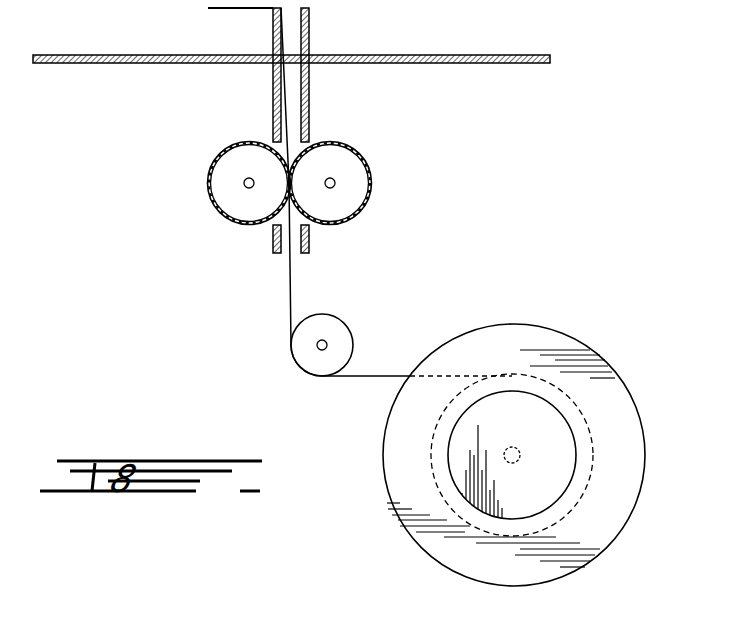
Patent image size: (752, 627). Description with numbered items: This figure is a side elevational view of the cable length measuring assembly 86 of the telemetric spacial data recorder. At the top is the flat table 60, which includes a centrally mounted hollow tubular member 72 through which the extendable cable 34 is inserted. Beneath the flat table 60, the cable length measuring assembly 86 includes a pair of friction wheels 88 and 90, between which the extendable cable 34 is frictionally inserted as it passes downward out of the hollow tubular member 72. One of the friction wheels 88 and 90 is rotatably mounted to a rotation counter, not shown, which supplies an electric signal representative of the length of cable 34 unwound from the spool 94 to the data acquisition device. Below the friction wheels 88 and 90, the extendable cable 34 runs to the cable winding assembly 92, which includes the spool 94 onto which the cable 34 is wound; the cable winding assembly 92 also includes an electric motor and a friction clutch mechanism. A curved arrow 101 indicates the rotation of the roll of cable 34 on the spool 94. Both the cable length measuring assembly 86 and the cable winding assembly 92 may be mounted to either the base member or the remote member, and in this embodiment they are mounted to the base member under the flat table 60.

The extendable cable 34 is at (367, 375).
The flat table 60 is at (447, 55).
The hollow tubular member 72 is at (310, 33).
The cable length measuring assembly 86 is at (331, 193).
The friction wheel 88 is at (241, 211).
The friction wheel 90 is at (353, 197).
The cable winding assembly 92 is at (604, 358).
The spool 94 is at (636, 410).
The direction of rotation 101 is at (541, 313).